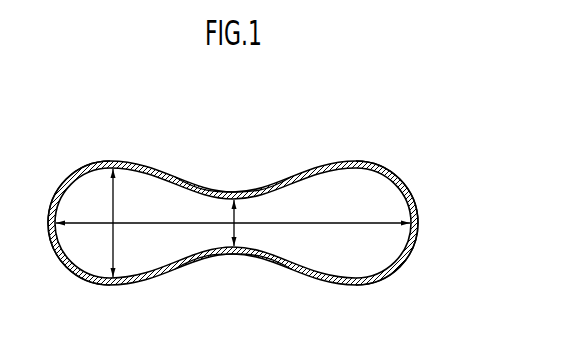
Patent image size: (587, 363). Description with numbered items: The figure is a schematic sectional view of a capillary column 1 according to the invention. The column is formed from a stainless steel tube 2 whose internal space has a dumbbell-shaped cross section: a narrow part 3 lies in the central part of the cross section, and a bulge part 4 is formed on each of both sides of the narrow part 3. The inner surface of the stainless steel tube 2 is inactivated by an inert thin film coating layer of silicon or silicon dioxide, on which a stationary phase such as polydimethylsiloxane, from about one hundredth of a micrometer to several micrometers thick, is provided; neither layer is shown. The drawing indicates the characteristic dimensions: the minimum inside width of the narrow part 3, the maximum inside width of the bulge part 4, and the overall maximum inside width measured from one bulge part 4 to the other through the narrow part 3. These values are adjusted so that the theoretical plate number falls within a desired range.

The capillary column 1 is at (385, 92).
The stainless steel tube 2 is at (407, 182).
The narrow part 3 is at (223, 248).
The bulge part 4 is at (88, 253).